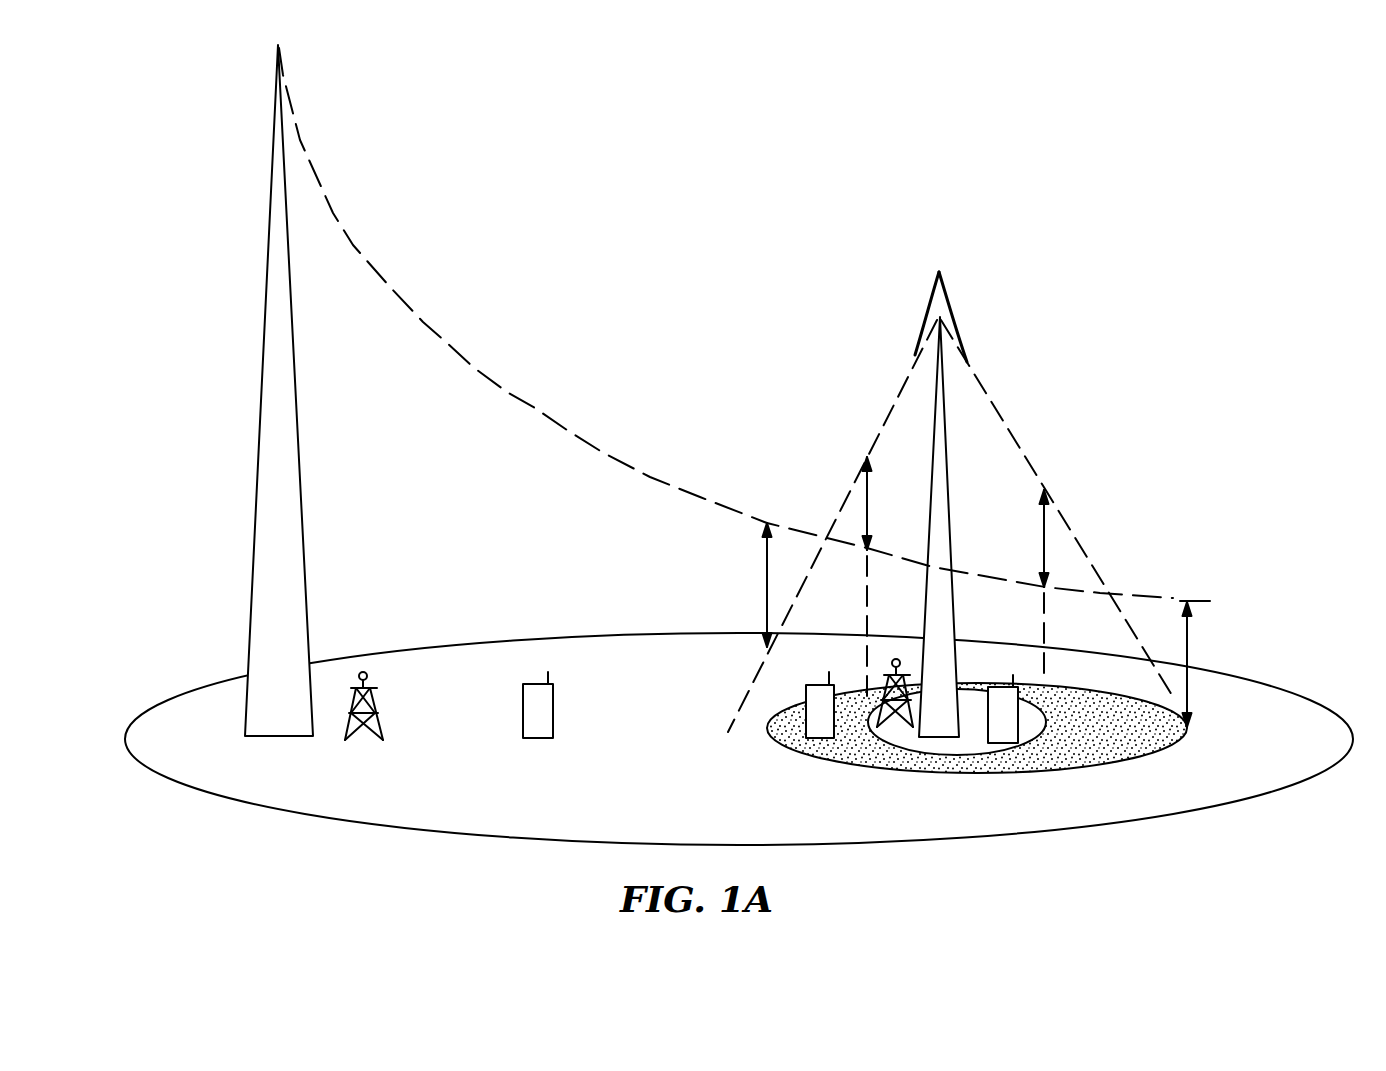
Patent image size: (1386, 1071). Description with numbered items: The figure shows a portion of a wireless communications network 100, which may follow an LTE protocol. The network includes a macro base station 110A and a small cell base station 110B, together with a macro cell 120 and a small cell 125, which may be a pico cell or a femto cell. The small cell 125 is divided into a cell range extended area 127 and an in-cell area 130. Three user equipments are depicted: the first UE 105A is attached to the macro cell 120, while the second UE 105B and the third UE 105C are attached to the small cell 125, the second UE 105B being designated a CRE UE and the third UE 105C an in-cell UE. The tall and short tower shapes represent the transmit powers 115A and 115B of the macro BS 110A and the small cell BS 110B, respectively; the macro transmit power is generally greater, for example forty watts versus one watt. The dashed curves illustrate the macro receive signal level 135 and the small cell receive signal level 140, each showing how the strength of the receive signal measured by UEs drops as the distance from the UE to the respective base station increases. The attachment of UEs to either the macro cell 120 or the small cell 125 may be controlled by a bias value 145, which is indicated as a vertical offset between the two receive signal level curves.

The wireless communications network 100 is at (175, 115).
The first UE 105A is at (523, 716).
The second UE 105B is at (812, 723).
The third UE 105C is at (1001, 697).
The macro base station 110A is at (380, 713).
The small cell base station 110B is at (894, 658).
The transmit power of the macro BS 115A is at (301, 463).
The transmit power of the small cell BS 115B is at (948, 465).
The macro cell 120 is at (495, 828).
The small cell 125 is at (924, 770).
The cell range extended area 127 is at (1113, 730).
The in-cell area 130 is at (990, 765).
The macro receive signal level 135 is at (357, 248).
The small cell receive signal level 140 is at (951, 457).
The bias value 145 is at (767, 586).